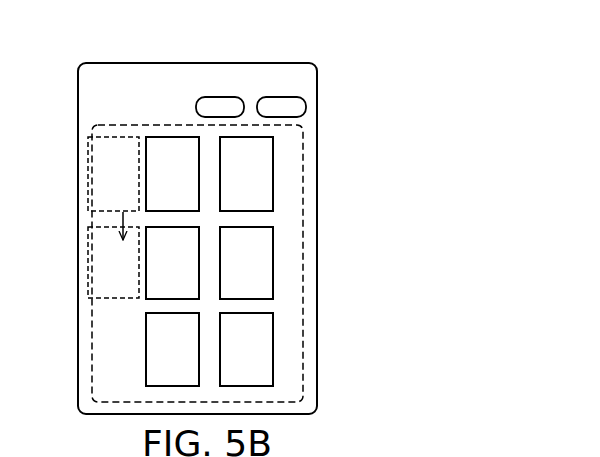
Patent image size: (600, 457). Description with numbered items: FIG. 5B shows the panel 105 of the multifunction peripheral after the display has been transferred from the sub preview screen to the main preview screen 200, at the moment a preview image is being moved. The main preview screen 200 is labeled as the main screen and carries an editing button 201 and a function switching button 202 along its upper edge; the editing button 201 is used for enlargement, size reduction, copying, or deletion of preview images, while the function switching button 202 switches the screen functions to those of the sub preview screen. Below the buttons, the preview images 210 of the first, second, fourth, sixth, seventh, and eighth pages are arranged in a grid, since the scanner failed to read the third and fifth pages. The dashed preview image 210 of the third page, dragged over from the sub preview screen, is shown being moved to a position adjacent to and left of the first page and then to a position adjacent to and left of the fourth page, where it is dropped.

The panel 105 is at (299, 54).
The main preview screen 200 is at (317, 78).
The editing button 201 is at (196, 107).
The function switching button 202 is at (306, 107).
The preview image 210 is at (289, 198).